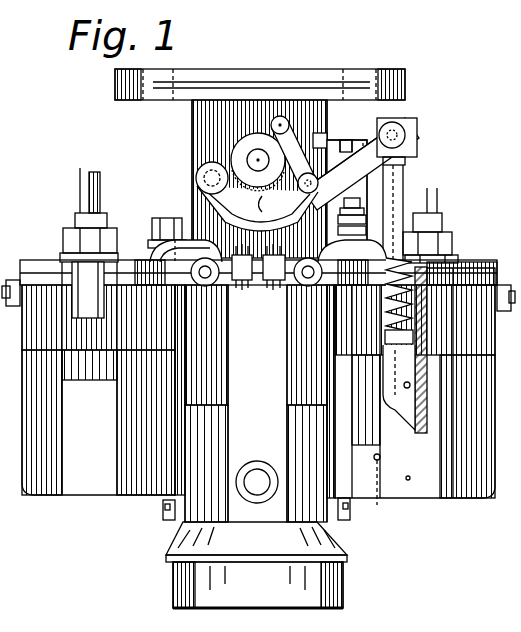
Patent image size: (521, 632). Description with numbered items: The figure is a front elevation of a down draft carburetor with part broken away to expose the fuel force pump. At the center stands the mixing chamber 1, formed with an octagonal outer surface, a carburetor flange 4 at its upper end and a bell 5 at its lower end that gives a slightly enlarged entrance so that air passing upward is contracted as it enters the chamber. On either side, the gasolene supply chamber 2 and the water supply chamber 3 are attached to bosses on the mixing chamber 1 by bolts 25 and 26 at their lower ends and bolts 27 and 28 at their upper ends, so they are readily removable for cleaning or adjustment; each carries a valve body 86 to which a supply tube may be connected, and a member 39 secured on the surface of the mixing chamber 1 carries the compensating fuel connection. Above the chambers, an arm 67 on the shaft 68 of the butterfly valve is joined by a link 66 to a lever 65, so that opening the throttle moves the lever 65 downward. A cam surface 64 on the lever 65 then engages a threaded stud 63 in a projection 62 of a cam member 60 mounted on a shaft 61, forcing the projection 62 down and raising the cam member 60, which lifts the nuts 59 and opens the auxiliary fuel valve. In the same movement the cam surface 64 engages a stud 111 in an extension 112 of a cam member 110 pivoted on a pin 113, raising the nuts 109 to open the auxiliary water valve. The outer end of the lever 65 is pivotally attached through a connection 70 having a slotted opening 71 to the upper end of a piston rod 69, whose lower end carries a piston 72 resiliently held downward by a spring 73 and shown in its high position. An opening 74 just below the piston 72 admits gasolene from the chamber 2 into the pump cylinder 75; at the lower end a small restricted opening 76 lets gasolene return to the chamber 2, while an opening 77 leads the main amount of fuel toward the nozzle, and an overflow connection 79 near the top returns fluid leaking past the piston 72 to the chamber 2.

The mixing chamber 1 is at (216, 492).
The gasolene supply chamber 2 is at (472, 498).
The water supply chamber 3 is at (80, 492).
The carburetor flange 4 is at (405, 90).
The bell 5 is at (344, 587).
The bolt 25 is at (162, 513).
The bolt 26 is at (348, 520).
The bolt 27 is at (7, 292).
The bolt 28 is at (505, 288).
The member 39 is at (332, 202).
The nuts 59 is at (437, 214).
The cam member 60 is at (352, 244).
The shaft 61 is at (306, 288).
The projection 62 is at (262, 226).
The threaded stud 63 is at (273, 200).
The cam surface 64 is at (243, 218).
The lever 65 is at (362, 186).
The link 66 is at (292, 146).
The arm 67 is at (266, 118).
The shaft 68 is at (254, 150).
The piston rod 69 is at (433, 200).
The connection 70 is at (413, 127).
The slotted opening 71 is at (410, 138).
The piston 72 is at (405, 372).
The spring 73 is at (428, 320).
The opening 74 is at (415, 395).
The pump cylinder 75 is at (410, 410).
The restricted opening 76 is at (409, 480).
The opening 77 is at (377, 505).
The overflow connection 79 is at (420, 338).
The valve body 86 is at (451, 236).
The nuts 109 is at (150, 217).
The cam member 110 is at (148, 244).
The stud 111 is at (187, 203).
The extension 112 is at (186, 216).
The pin 113 is at (191, 236).